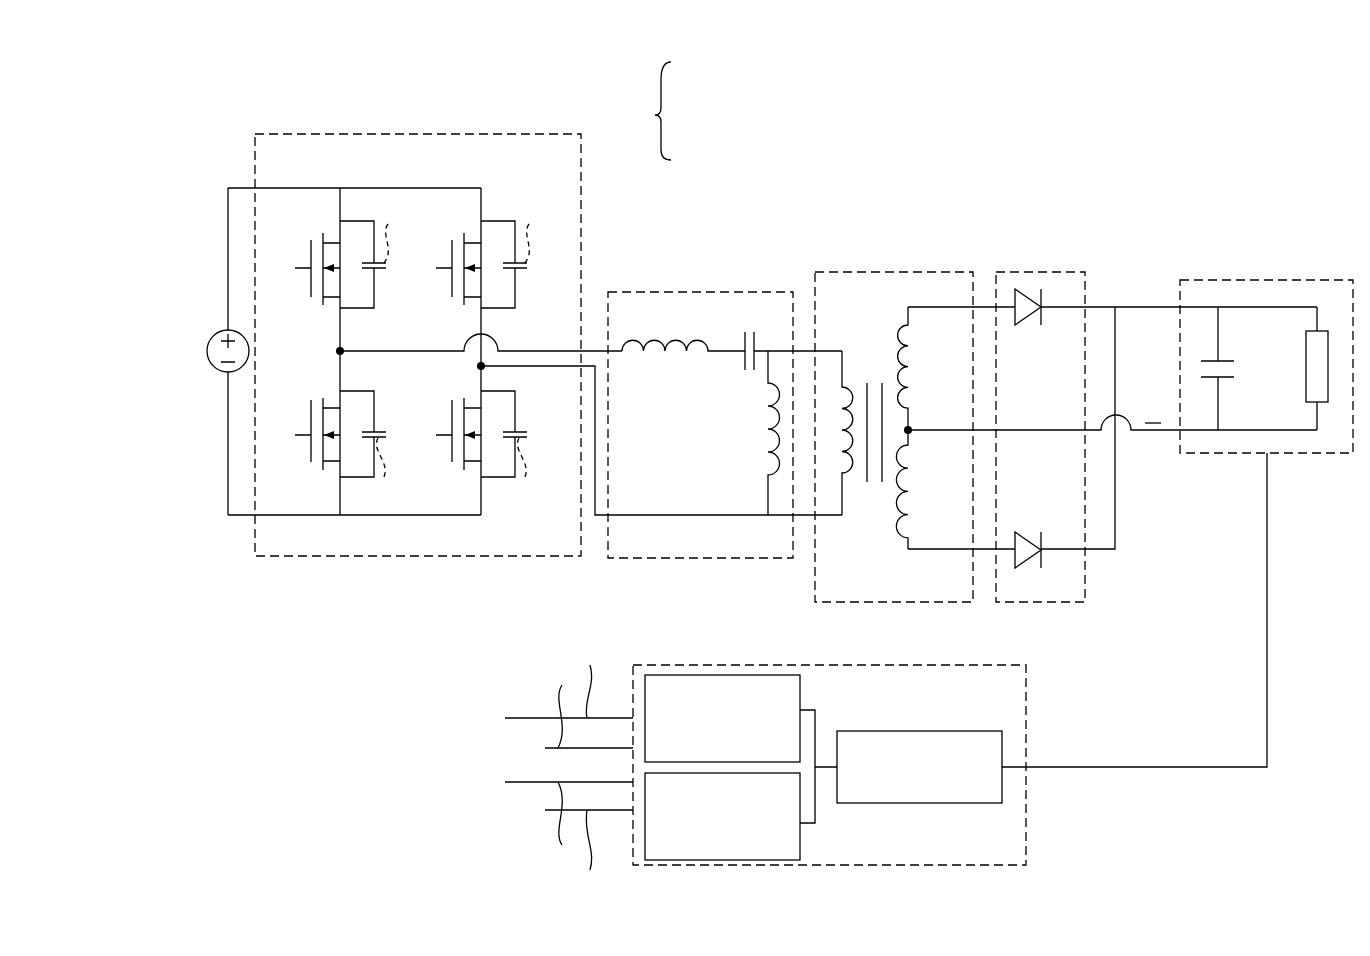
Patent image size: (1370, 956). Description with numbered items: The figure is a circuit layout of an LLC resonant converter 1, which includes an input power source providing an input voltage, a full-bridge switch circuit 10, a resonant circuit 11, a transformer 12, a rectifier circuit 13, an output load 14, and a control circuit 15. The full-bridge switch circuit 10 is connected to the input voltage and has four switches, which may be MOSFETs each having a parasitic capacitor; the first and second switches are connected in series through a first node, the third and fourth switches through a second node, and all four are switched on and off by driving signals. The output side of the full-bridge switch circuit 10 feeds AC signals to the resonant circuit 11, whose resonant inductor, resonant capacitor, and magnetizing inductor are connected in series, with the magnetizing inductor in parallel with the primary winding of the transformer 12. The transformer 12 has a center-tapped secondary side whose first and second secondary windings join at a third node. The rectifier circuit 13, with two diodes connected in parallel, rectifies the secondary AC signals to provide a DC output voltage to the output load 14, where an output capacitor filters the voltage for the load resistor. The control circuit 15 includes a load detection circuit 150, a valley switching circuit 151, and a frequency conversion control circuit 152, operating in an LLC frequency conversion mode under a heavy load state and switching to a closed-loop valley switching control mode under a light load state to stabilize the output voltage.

The LLC resonant converter 1 is at (163, 95).
The full-bridge switch circuit 10 is at (316, 134).
The resonant circuit 11 is at (712, 292).
The transformer 12 is at (860, 272).
The rectifier circuit 13 is at (1042, 272).
The output load 14 is at (1268, 280).
The control circuit 15 is at (876, 665).
The load detection circuit 150 is at (920, 731).
The valley switching circuit 151 is at (717, 675).
The frequency conversion control circuit 152 is at (717, 860).